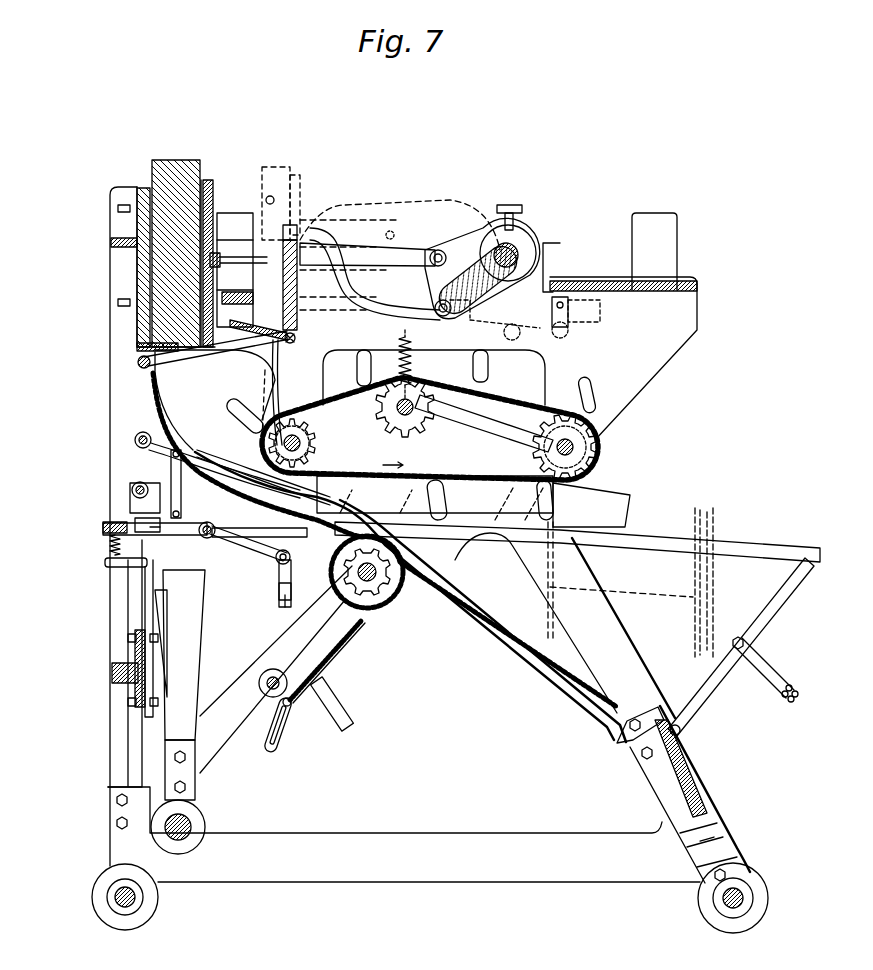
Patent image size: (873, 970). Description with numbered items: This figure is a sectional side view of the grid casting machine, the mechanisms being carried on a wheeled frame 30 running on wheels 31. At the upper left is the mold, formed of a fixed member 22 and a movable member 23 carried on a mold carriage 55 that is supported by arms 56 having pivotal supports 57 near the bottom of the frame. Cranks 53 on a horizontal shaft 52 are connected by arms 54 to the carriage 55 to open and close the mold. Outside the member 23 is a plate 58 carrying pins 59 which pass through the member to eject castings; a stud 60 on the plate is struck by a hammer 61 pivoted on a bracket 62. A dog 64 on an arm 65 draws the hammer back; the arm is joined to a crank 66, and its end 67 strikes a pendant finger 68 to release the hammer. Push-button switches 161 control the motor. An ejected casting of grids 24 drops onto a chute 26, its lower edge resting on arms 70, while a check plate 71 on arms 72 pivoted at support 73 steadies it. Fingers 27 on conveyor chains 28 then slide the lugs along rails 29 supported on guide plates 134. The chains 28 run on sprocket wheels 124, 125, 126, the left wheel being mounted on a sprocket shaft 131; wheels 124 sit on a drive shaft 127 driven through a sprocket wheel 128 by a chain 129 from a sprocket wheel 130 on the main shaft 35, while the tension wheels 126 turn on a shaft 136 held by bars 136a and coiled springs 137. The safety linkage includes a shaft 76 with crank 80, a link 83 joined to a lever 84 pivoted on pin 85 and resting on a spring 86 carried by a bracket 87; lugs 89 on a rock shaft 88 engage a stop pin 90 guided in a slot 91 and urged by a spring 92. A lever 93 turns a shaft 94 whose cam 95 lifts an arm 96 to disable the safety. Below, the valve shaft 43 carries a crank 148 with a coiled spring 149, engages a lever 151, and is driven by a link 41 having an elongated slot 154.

The fixed mold member 22 is at (150, 188).
The movable mold member 23 is at (180, 160).
The pins 59 is at (205, 180).
The plate 58 is at (215, 190).
The mold carriage 55 is at (236, 213).
The stud 60 is at (236, 257).
The dog 64 is at (280, 222).
The hammer 61 is at (297, 230).
The bracket 62 is at (296, 341).
The arms 54 is at (377, 247).
The arm 65 is at (340, 232).
The shaft 52 is at (522, 245).
The cranks 53 is at (462, 255).
The end of arm 67 is at (470, 318).
The pendant finger 68 is at (600, 310).
The crank 66 is at (548, 260).
The switches 161 is at (667, 244).
The frame 30 is at (683, 336).
The wheels 31 is at (98, 889).
The arms 56 is at (200, 636).
The pivotal supports 57 is at (200, 818).
The bracket 87 is at (128, 578).
The spring 86 is at (110, 563).
The pivotal support 73 is at (138, 362).
The arms 72 is at (193, 352).
The check plate 71 is at (280, 383).
The chute 26 is at (158, 400).
The fingers 27 is at (358, 374).
The coiled springs 137 is at (412, 362).
The conveyor chains 28 is at (434, 377).
The shaft 136 is at (380, 406).
The bars 136a is at (487, 430).
The sprocket 131 is at (302, 440).
The sprocket wheels 125 is at (310, 458).
The sprocket wheels 126 is at (417, 428).
The drive shaft 127 is at (598, 442).
The sprocket wheels 124 is at (598, 458).
The sprocket wheel 128 is at (555, 485).
The guide plates 134 is at (628, 503).
The grids 24 is at (693, 597).
The shaft 76 is at (134, 440).
The crank 80 is at (145, 452).
The arms 70 is at (216, 462).
The link 83 is at (171, 471).
The rock shaft 88 is at (131, 489).
The lugs 89 is at (130, 502).
The slot 91 is at (135, 520).
The stop pin 90 is at (150, 517).
The spring 92 is at (108, 535).
The lever 84 is at (175, 535).
The pivot pin 85 is at (212, 538).
The arm 96 is at (300, 533).
The shaft 94 is at (290, 555).
The cam 95 is at (291, 572).
The lever 93 is at (279, 599).
The sprocket wheel 130 is at (342, 583).
The shaft 35 is at (360, 580).
The chain 129 is at (420, 578).
The coiled spring 149 is at (335, 655).
The lever 151 is at (347, 720).
The valve shaft 43 is at (277, 670).
The crank 148 is at (283, 703).
The valve operating link 41 is at (285, 735).
The elongated slot 154 is at (280, 745).
The rails 29 is at (505, 535).